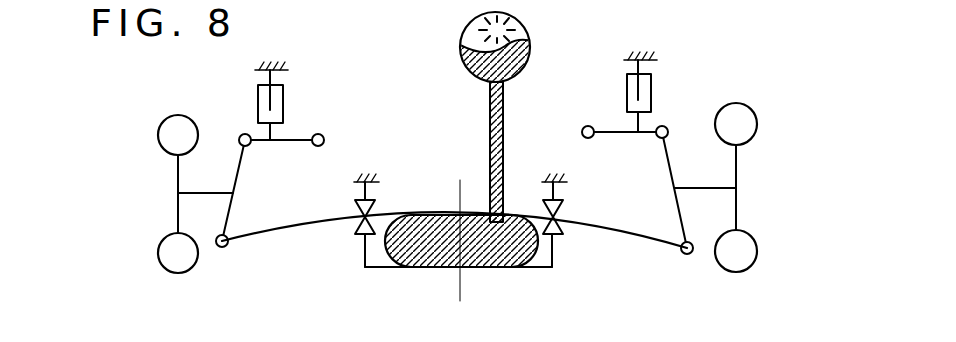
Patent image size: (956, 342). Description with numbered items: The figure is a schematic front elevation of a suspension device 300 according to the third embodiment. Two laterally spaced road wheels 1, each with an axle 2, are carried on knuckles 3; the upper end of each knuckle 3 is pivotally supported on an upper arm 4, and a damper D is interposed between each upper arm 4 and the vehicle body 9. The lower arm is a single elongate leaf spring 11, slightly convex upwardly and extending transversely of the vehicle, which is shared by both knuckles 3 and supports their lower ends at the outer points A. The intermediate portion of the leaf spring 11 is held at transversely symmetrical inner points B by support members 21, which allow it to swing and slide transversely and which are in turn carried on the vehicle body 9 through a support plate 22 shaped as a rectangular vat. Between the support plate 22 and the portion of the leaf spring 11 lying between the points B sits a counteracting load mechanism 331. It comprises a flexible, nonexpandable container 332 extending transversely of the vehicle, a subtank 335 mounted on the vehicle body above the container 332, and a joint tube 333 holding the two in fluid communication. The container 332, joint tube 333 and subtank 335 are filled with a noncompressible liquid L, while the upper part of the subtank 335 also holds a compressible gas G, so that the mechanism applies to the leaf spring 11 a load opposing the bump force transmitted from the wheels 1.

The road wheel 1 is at (165, 116).
The axle 2 is at (210, 191).
The knuckle 3 is at (240, 176).
The upper arm 4 is at (303, 141).
The outer supporting point A is at (222, 249).
The damper D is at (283, 90).
The vehicle body 9 is at (361, 174).
The inner supporting point B is at (356, 212).
The leaf spring 11 is at (388, 216).
The support member 21 is at (357, 233).
The support plate 22 is at (545, 268).
The suspension device 300 is at (380, 62).
The counteracting load mechanism 331 is at (430, 242).
The container 332 is at (393, 263).
The joint tube 333 is at (490, 106).
The subtank 335 is at (531, 40).
The compressible fluid G is at (469, 28).
The noncompressible fluid L is at (533, 62).